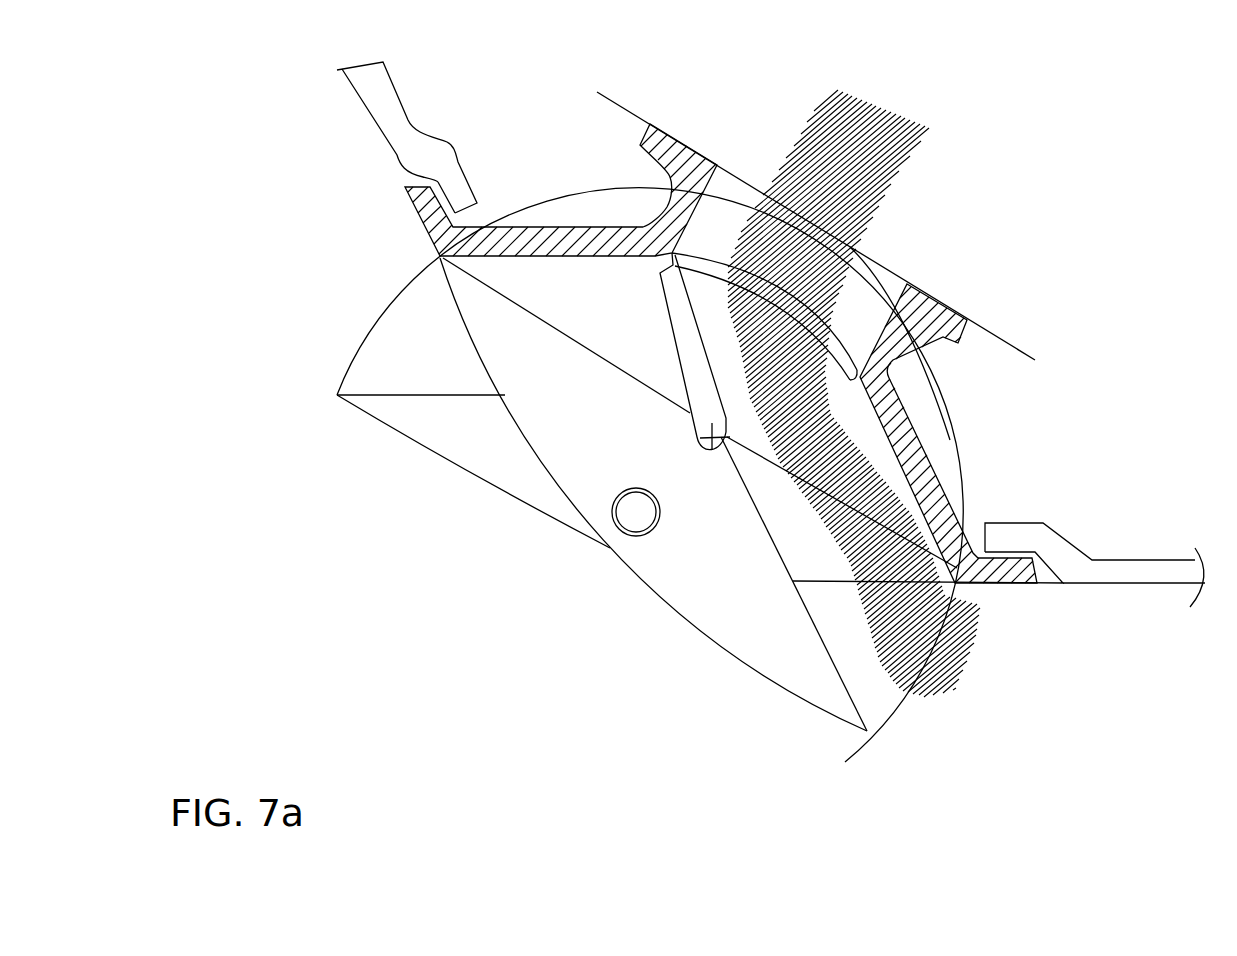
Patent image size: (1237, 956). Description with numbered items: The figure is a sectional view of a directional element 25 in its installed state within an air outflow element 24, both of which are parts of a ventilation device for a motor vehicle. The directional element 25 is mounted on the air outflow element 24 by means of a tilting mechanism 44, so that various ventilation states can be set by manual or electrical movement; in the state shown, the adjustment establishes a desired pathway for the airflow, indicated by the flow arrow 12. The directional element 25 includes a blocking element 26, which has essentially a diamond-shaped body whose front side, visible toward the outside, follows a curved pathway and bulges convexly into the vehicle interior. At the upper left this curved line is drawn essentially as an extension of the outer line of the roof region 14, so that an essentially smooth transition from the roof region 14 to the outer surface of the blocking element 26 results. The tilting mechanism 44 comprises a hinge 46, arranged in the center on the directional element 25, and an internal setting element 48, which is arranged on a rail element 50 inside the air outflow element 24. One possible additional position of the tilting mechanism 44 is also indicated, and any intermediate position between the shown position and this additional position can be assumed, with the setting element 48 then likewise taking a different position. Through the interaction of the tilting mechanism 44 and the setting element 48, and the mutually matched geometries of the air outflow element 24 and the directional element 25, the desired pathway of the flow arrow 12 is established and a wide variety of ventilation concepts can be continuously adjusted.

The flow arrow 12 is at (937, 664).
The roof region 14 is at (382, 129).
The air outflow element 24 is at (907, 437).
The directional element 25 is at (437, 361).
The blocking element 26 is at (570, 432).
The tilting mechanism 44 is at (712, 525).
The hinge 46 is at (624, 524).
The setting element 48 is at (707, 396).
The rail element 50 is at (707, 257).